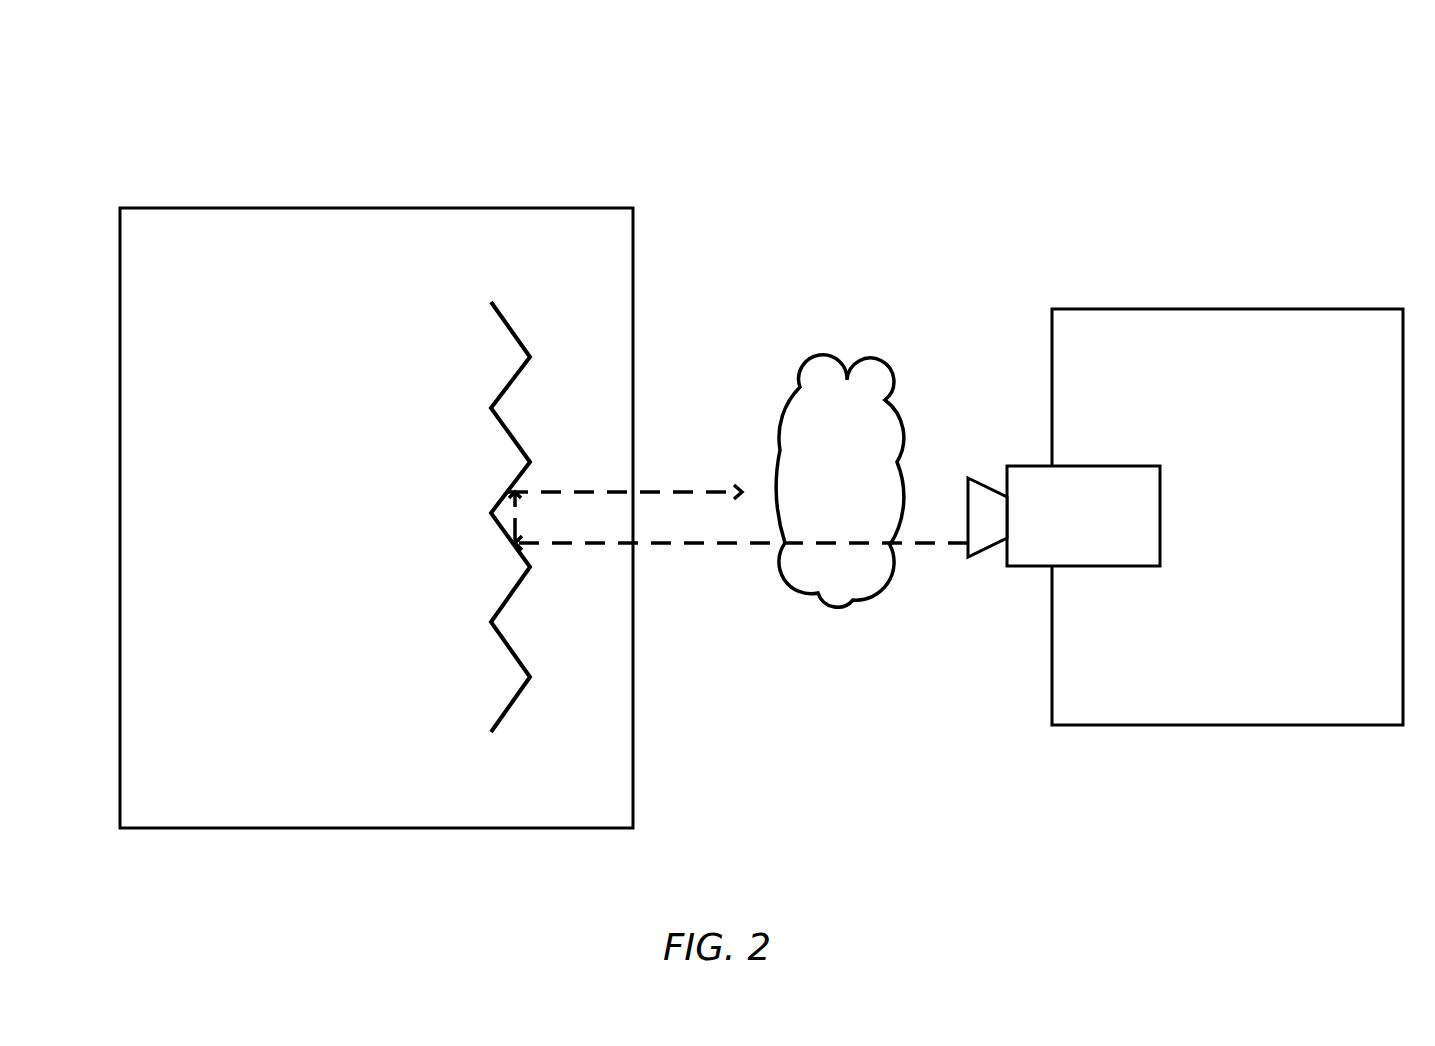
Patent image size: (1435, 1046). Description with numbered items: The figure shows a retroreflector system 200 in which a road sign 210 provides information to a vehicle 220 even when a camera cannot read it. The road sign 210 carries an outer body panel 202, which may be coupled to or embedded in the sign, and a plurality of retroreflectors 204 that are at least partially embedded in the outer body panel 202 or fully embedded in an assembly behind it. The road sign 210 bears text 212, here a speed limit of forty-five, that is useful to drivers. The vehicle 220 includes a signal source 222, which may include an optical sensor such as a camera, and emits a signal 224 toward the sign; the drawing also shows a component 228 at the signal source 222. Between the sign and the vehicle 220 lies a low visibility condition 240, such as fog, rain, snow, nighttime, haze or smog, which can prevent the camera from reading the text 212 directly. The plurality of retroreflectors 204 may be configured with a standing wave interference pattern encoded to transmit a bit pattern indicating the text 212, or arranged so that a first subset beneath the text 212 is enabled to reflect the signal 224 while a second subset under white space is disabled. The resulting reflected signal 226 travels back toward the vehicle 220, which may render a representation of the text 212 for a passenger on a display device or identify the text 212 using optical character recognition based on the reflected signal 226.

The retroreflector system 200 is at (156, 146).
The outer body panel 202 is at (646, 318).
The plurality of retroreflectors 204 is at (521, 311).
The road sign 210 is at (259, 221).
The text 212 is at (292, 600).
The vehicle 220 is at (1185, 517).
The signal source 222 is at (1147, 452).
The signal 224 is at (667, 560).
The reflected signal 226 is at (691, 470).
The camera lens 228 is at (1010, 581).
The low visibility condition 240 is at (840, 481).